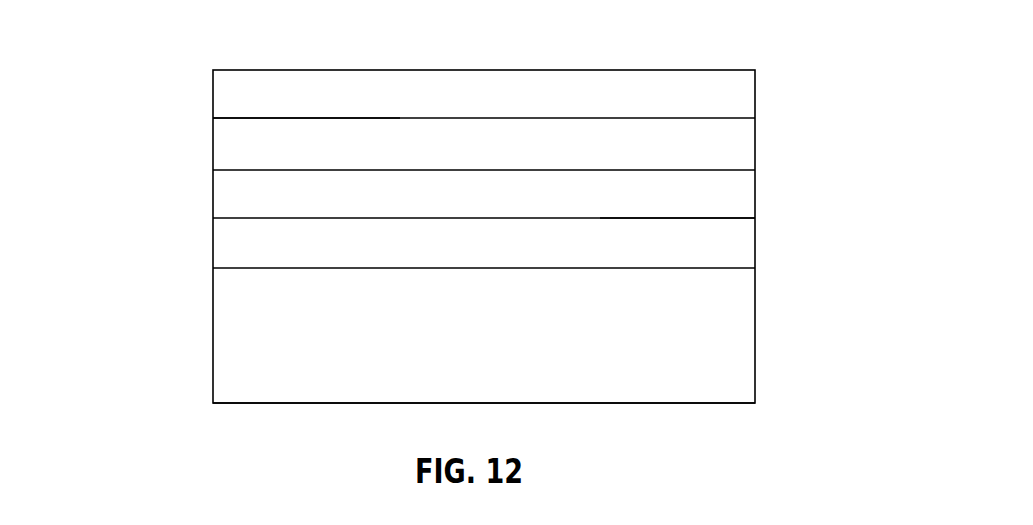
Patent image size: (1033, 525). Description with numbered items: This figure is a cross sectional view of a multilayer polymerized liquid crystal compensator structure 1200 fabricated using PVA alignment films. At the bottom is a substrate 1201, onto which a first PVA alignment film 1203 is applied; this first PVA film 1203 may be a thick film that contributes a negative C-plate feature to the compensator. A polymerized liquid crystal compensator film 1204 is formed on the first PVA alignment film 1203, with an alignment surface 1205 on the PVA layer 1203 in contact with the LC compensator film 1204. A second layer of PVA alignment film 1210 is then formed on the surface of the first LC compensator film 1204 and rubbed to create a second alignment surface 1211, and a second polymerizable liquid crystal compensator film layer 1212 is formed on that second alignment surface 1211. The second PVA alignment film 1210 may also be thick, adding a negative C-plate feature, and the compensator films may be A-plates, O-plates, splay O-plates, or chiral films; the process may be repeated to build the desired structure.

The light emitting device structure 1200 is at (200, 335).
The substrate 1201 is at (693, 345).
The first PVA alignment film 1203 is at (738, 242).
The polymerized liquid crystal compensator film 1204 is at (228, 188).
The alignment surface 1205 is at (712, 216).
The second layer of PVA alignment film 1210 is at (743, 130).
The second alignment surface 1211 is at (243, 118).
The second polymerizable liquid crystal compensator film layer 1212 is at (259, 94).